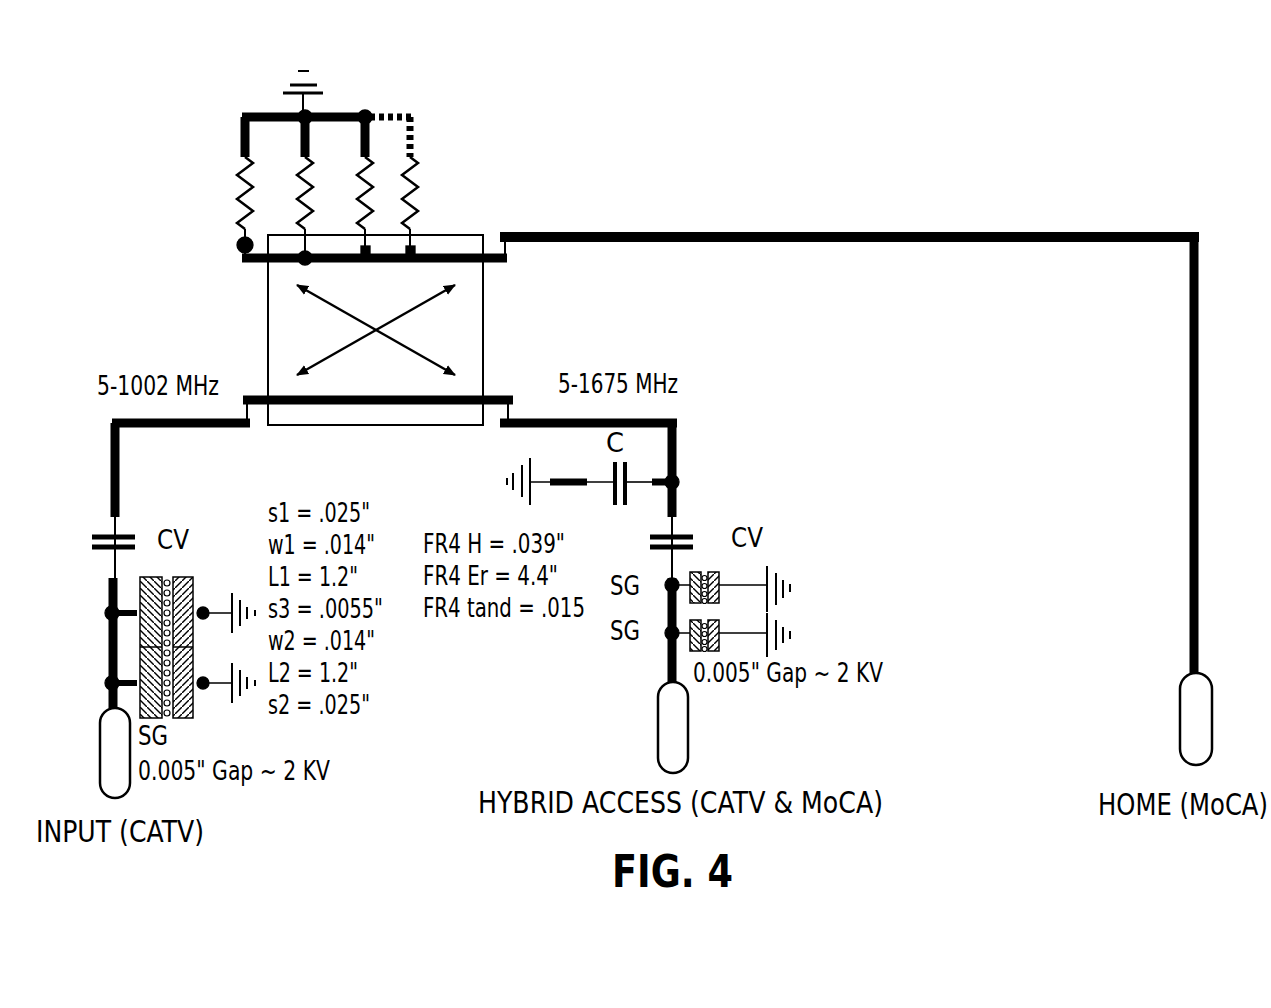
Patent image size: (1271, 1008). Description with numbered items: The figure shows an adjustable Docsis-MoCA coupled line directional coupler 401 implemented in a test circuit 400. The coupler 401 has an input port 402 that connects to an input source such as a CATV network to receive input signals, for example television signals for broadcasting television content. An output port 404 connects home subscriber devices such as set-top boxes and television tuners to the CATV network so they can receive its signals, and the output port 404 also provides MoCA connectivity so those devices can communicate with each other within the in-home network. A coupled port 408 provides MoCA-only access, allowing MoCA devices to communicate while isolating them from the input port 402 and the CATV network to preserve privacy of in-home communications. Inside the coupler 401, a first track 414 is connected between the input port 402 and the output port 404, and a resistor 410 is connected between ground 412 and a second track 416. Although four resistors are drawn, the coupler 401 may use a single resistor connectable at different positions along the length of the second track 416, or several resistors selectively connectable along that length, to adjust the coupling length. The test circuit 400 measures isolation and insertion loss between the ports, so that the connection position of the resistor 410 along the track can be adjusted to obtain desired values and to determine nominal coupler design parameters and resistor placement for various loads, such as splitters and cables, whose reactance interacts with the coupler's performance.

The test circuit 400 is at (535, 85).
The adjustable Docsis-MoCA coupled line directional coupler 401 is at (157, 293).
The input port 402 is at (98, 774).
The output port 404 is at (656, 740).
The coupled port 408 is at (1178, 727).
The resistor 410 is at (240, 177).
The ground 412 is at (313, 80).
The first track 414 is at (312, 403).
The second track 416 is at (440, 257).